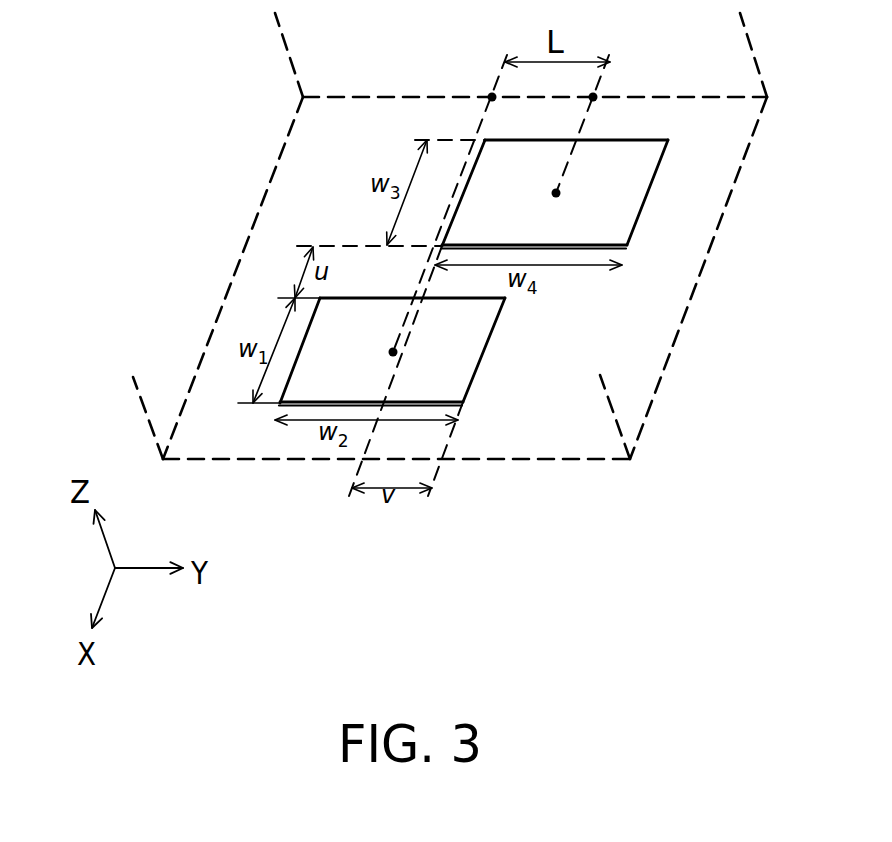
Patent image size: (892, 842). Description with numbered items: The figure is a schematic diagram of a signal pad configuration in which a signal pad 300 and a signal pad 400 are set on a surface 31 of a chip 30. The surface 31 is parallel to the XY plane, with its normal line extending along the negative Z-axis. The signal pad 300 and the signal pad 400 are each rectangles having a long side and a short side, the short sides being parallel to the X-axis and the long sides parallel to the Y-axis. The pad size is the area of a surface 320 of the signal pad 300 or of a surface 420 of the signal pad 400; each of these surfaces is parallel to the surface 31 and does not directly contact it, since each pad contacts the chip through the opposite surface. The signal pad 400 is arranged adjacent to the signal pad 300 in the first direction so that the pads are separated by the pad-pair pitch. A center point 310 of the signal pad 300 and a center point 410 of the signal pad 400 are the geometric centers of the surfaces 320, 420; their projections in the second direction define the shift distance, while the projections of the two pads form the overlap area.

The chip 30 is at (308, 53).
The surface of the chip 31 is at (255, 247).
The signal pad 300 is at (505, 313).
The center point of the signal pad 310 is at (389, 353).
The surface of the signal pad 320 is at (455, 380).
The signal pad 400 is at (667, 152).
The center point of the signal pad 410 is at (560, 191).
The surface of the signal pad 420 is at (618, 220).